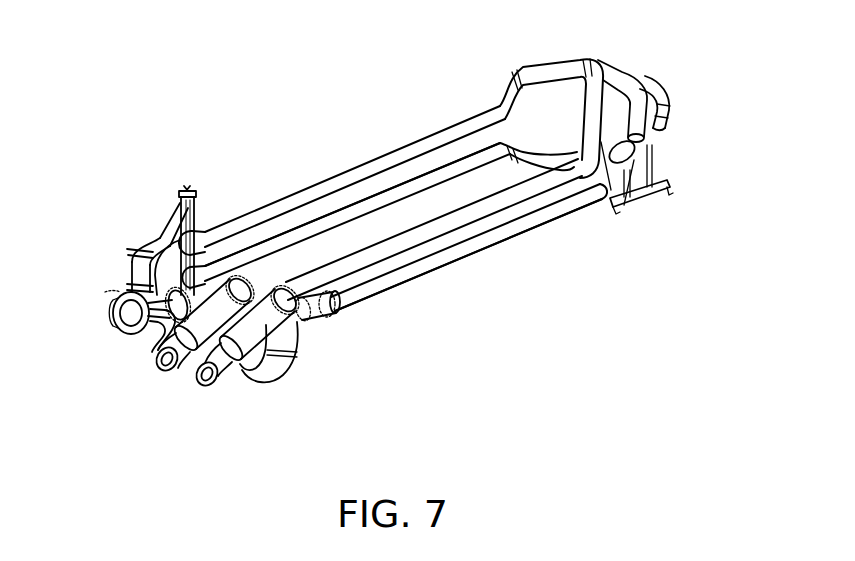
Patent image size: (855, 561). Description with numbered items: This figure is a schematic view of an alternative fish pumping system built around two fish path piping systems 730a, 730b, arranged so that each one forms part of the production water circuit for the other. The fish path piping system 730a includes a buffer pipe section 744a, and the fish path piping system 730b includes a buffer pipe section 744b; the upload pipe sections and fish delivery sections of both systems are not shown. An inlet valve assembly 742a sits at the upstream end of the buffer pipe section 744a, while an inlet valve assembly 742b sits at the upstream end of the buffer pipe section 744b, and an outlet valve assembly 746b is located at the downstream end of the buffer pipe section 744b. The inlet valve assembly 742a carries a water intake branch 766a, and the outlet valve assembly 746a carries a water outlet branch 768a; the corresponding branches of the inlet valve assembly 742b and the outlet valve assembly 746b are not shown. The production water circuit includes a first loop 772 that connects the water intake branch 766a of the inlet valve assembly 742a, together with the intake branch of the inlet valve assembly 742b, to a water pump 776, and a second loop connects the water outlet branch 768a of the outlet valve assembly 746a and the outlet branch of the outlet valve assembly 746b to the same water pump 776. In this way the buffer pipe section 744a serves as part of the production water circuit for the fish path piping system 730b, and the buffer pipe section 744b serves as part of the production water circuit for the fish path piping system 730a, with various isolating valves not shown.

The first loop 772 is at (250, 213).
The fish path piping system 730b is at (377, 243).
The buffer pipe section 744b is at (352, 259).
The buffer pipe section 744a is at (451, 262).
The fish path piping system 730a is at (520, 233).
The inlet valve assembly 742b is at (568, 141).
The inlet valve assembly 742a is at (650, 138).
The water intake branch 766a is at (648, 100).
The water pump 776 is at (107, 302).
The outlet valve assembly 746b is at (153, 324).
The outlet valve assembly 746a is at (243, 374).
The water outlet branch 768a is at (307, 327).